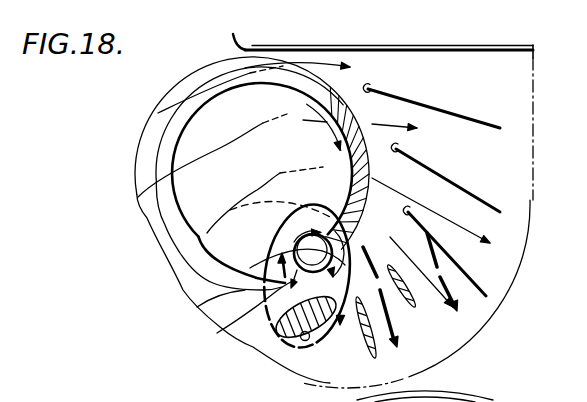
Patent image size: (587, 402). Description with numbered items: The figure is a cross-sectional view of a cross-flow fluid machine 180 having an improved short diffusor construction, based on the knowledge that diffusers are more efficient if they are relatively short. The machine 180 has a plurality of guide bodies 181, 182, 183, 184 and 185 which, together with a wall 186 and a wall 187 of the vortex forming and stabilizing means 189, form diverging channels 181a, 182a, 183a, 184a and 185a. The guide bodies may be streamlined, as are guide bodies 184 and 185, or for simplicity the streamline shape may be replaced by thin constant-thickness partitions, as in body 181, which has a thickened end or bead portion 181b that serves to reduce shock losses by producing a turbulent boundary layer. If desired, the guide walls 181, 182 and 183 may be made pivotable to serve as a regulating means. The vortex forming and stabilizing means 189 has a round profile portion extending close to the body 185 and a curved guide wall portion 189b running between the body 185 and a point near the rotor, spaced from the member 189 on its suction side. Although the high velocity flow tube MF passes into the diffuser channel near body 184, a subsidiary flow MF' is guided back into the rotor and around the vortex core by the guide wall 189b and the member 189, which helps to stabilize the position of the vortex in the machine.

The machine 180 is at (322, 48).
The wall 186 is at (440, 50).
The guide body 181 is at (478, 119).
The diverging channel 181a is at (500, 96).
The bead portion 181b is at (367, 85).
The guide body 182 is at (470, 190).
The diverging channel 182a is at (500, 160).
The guide body 183 is at (485, 289).
The diverging channel 183a is at (510, 268).
The guide body 184 is at (457, 312).
The diverging channel 184a is at (569, 320).
The guide body 185 is at (374, 349).
The diverging channel 185a is at (447, 366).
The wall 187 is at (280, 346).
The vortex forming and stabilizing means 189 is at (270, 336).
The curved guide wall portion 189b is at (340, 380).
The high velocity flow tube MF is at (193, 308).
The subsidiary flow MF' is at (229, 315).